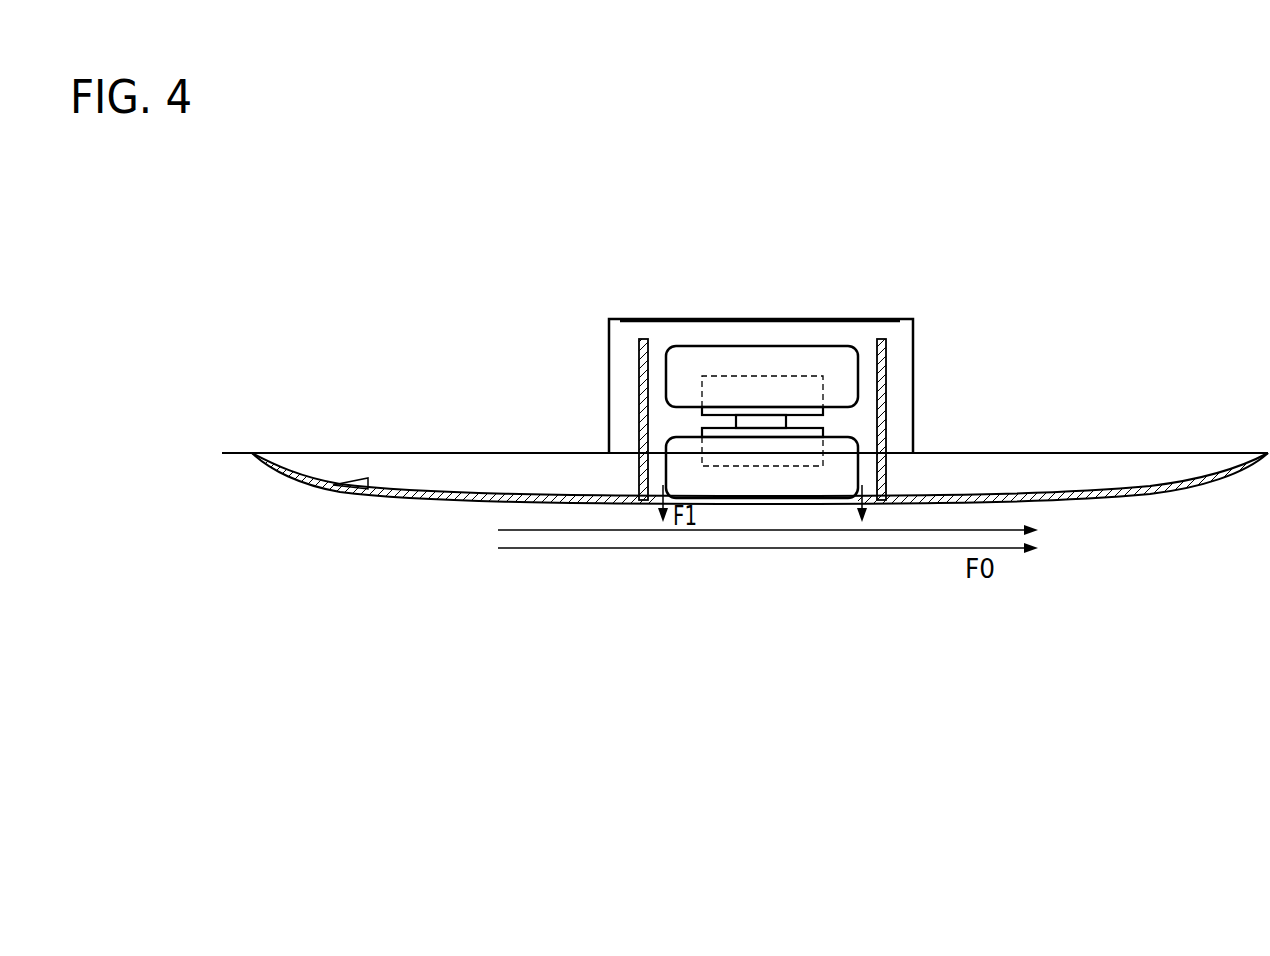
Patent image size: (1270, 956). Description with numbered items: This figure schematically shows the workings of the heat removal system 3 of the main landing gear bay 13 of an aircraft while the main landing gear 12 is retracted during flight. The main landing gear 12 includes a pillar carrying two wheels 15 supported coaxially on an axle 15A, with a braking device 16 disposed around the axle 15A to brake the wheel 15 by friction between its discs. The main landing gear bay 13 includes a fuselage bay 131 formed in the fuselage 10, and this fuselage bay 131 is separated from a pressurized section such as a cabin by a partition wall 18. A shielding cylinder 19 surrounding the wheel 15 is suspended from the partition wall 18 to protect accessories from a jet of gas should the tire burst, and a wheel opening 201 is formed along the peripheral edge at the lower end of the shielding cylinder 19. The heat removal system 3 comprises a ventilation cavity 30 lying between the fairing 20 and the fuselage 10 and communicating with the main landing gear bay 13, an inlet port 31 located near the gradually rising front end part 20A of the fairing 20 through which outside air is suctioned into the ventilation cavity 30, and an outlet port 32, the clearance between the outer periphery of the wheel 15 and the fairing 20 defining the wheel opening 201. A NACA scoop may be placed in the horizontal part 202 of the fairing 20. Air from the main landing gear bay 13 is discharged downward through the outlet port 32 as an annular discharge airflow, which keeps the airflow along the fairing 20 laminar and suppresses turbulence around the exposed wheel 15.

The heat removal system 3 is at (449, 478).
The fuselage 10 is at (1197, 456).
The main landing gear 12 is at (843, 342).
The main landing gear bay 13 is at (762, 319).
The fuselage bay 131 is at (740, 330).
The wheel 15 is at (762, 414).
The axle 15A is at (787, 418).
The braking device 16 is at (715, 376).
The partition wall 18 is at (673, 320).
The shielding cylinder 19 is at (887, 357).
The fairing 20 is at (1098, 500).
The front end part 20A is at (277, 468).
The wheel opening 201 is at (867, 500).
The horizontal part 202 is at (478, 503).
The ventilation cavity 30 is at (541, 483).
The inlet port 31 is at (355, 487).
The outlet port 32 is at (657, 500).